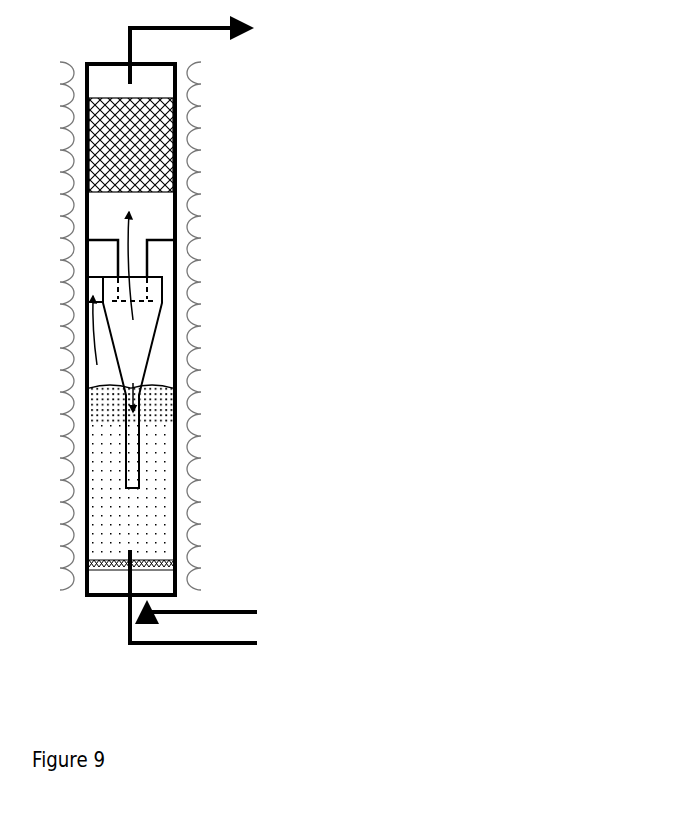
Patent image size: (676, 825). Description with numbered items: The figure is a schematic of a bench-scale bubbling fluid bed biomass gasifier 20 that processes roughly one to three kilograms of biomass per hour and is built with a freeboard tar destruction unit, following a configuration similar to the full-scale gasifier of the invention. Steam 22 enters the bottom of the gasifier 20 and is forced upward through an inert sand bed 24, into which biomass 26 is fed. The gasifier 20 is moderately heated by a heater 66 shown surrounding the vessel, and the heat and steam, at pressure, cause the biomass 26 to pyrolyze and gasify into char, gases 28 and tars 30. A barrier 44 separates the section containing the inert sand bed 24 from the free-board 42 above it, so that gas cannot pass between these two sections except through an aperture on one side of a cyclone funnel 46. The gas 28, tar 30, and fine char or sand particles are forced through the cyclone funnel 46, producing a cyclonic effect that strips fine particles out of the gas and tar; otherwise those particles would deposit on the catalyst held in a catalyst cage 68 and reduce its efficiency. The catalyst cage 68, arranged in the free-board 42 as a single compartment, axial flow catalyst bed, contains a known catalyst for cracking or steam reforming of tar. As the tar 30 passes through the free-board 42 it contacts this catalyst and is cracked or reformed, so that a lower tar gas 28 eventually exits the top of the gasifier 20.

The bench-scale gasifier 20 is at (218, 283).
The steam 22 is at (223, 613).
The inert sand bed 24 is at (130, 507).
The biomass 26 is at (215, 602).
The gases 28 is at (230, 47).
The tars 30 is at (230, 47).
The free-board 42 is at (155, 200).
The barrier 44 is at (167, 240).
The cyclone funnel 46 is at (160, 328).
The heater 66 is at (193, 423).
The catalyst cage 68 is at (150, 147).